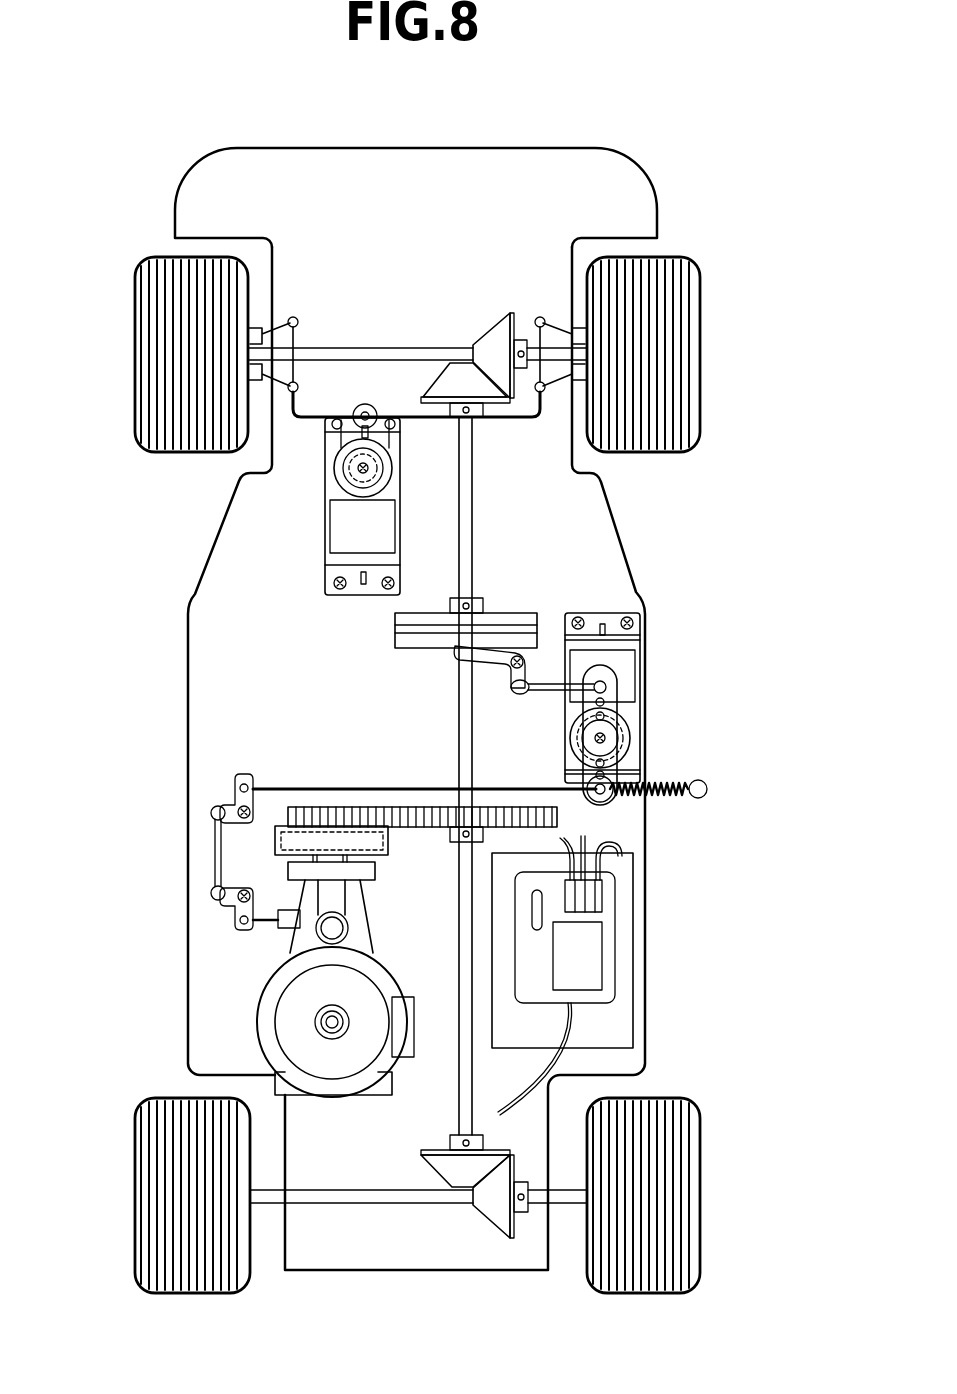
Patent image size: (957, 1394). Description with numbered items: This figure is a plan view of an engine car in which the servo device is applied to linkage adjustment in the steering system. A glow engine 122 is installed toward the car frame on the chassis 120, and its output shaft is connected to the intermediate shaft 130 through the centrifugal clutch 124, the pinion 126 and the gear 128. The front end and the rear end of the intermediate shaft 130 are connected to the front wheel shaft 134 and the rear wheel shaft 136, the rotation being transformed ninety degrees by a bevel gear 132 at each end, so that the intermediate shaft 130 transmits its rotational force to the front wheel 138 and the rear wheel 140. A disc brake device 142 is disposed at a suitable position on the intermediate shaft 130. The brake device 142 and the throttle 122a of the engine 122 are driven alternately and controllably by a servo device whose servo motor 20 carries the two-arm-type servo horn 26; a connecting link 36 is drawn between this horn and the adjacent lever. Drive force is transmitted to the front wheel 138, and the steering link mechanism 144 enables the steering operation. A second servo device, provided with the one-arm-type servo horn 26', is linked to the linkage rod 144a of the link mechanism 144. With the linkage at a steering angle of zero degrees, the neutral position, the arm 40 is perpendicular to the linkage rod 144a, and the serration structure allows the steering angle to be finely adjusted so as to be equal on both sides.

The chassis 120 is at (205, 654).
The glow engine 122 is at (262, 1025).
The throttle 122a is at (268, 926).
The centrifugal clutch 124 is at (275, 845).
The pinion 126 is at (325, 807).
The gear 128 is at (403, 807).
The intermediate shaft 130 is at (458, 900).
The bevel gear 132 is at (495, 340).
The front wheel shaft 134 is at (390, 355).
The rear wheel shaft 136 is at (370, 1201).
The front wheel 138 is at (155, 345).
The rear wheel 140 is at (148, 1200).
The disc brake device 142 is at (520, 612).
The steering link mechanism 144 is at (318, 333).
The linkage rod 144a is at (505, 420).
The servo motor 20 is at (325, 547).
The two-arm-type servo horn 26 is at (659, 735).
The one-arm-type servo horn 26' is at (317, 459).
The link rod 36 is at (615, 683).
The arm 40 is at (375, 442).